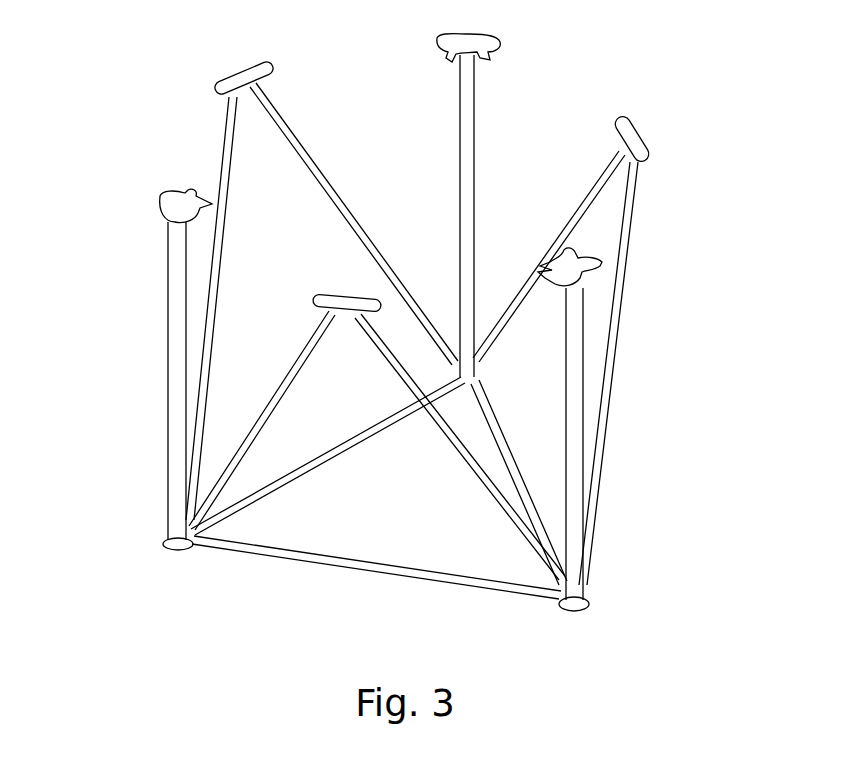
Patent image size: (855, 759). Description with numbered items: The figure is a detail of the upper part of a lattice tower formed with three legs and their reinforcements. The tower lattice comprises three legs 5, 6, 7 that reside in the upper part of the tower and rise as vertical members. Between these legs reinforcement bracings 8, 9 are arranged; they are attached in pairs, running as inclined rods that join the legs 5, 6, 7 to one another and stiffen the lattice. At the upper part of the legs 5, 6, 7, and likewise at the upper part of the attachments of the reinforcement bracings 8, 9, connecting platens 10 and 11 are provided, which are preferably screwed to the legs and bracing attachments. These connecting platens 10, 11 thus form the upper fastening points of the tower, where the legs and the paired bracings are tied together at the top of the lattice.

The leg 5 is at (165, 272).
The leg 6 is at (480, 110).
The leg 7 is at (590, 390).
The reinforcement bracing 8 is at (315, 158).
The reinforcement bracing 9 is at (218, 158).
The connecting platen 10 is at (602, 263).
The connecting platen 11 is at (642, 121).